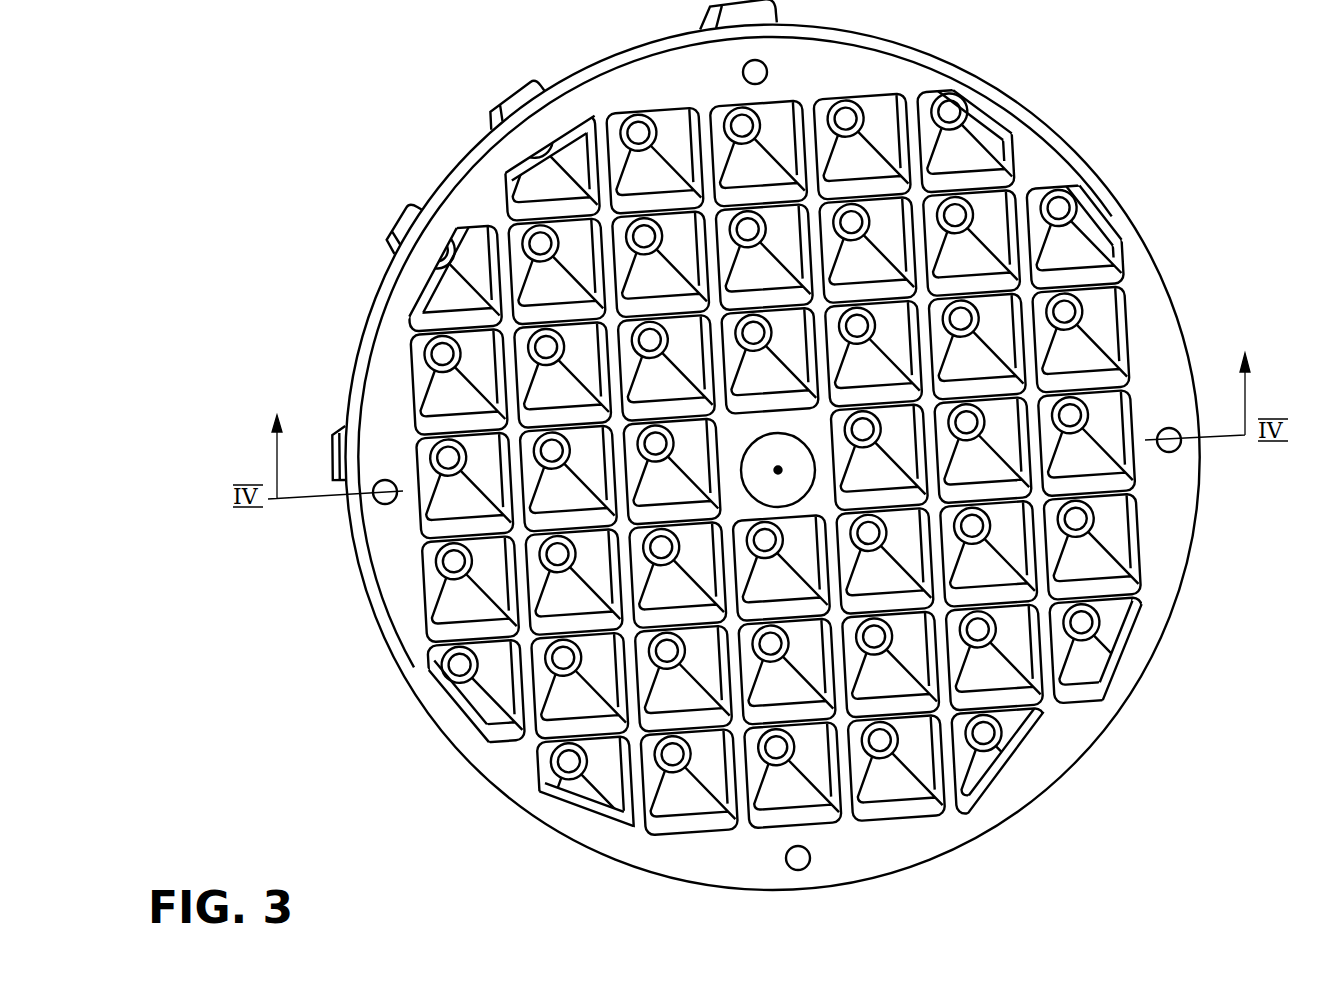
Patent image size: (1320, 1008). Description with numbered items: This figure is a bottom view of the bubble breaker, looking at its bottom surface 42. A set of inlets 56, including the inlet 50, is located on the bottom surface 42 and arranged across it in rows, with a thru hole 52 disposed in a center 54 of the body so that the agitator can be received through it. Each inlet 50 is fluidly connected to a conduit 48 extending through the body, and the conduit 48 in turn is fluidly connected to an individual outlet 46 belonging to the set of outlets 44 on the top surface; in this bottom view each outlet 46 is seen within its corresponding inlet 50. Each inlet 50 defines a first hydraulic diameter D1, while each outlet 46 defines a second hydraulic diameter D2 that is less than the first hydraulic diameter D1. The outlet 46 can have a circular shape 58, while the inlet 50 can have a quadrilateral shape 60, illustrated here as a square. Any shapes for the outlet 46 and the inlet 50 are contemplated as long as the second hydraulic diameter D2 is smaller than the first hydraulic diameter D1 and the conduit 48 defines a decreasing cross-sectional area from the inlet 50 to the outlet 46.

The bottom surface 42 is at (1185, 510).
The set of outlets 44 is at (777, 748).
The outlet 46 is at (882, 753).
The conduit 48 is at (1092, 662).
The inlet 50 is at (1002, 697).
The thru hole 52 is at (753, 498).
The center 54 is at (780, 469).
The set of inlets 56 is at (1031, 432).
The circular shape 58 is at (632, 143).
The quadrilateral shape 60 is at (481, 333).
The first hydraulic diameter D1 is at (870, 256).
The second hydraulic diameter D2 is at (667, 223).